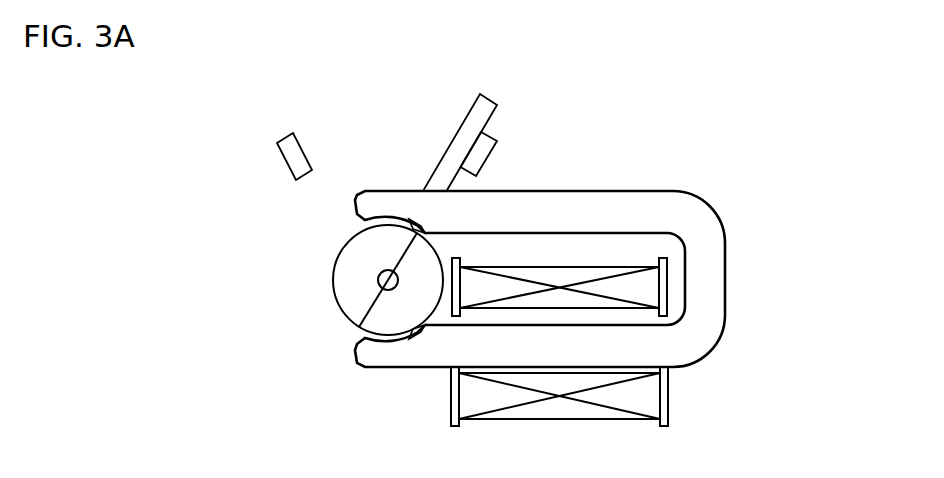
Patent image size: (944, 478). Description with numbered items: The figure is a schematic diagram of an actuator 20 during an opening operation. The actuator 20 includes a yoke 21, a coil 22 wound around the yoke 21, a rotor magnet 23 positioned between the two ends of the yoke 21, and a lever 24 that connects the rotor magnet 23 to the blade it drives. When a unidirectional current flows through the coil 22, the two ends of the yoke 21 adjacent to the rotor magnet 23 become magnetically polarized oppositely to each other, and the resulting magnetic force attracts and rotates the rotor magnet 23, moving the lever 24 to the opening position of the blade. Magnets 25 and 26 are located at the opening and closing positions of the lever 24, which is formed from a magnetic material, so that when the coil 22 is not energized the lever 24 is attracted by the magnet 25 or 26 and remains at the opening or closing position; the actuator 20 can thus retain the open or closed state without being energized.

The actuator 20 is at (766, 188).
The yoke 21 is at (725, 281).
The coil 22 is at (575, 258).
The rotor magnet 23 is at (333, 278).
The lever 24 is at (490, 98).
The magnet 25 is at (500, 141).
The magnet 26 is at (299, 142).